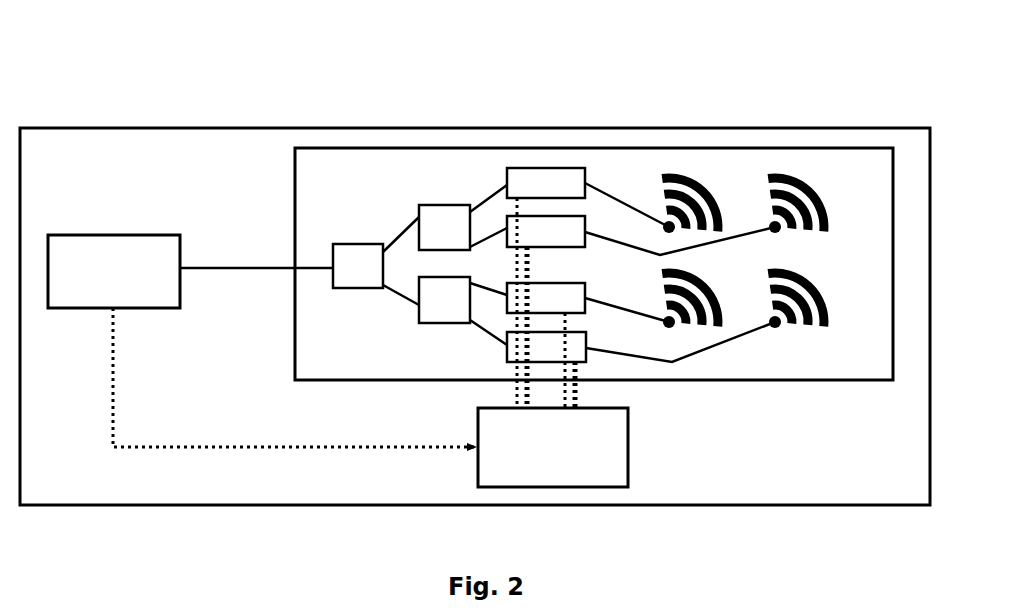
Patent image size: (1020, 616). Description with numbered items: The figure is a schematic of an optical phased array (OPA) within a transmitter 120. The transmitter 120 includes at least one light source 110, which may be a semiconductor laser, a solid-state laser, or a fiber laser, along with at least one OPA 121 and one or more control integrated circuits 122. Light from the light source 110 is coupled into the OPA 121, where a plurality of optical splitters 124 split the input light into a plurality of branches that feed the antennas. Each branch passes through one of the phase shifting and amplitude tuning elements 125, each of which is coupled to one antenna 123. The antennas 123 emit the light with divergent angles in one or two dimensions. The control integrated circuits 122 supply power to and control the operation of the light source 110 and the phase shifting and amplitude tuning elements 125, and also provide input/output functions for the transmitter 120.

The light source 110 is at (144, 235).
The transmitter 120 is at (303, 127).
The OPA 121 is at (434, 147).
The control integrated circuits 122 is at (475, 436).
The antennas 123 is at (690, 176).
The optical splitters 124 is at (359, 292).
The phase shifting and amplitude tuning elements 125 is at (561, 164).